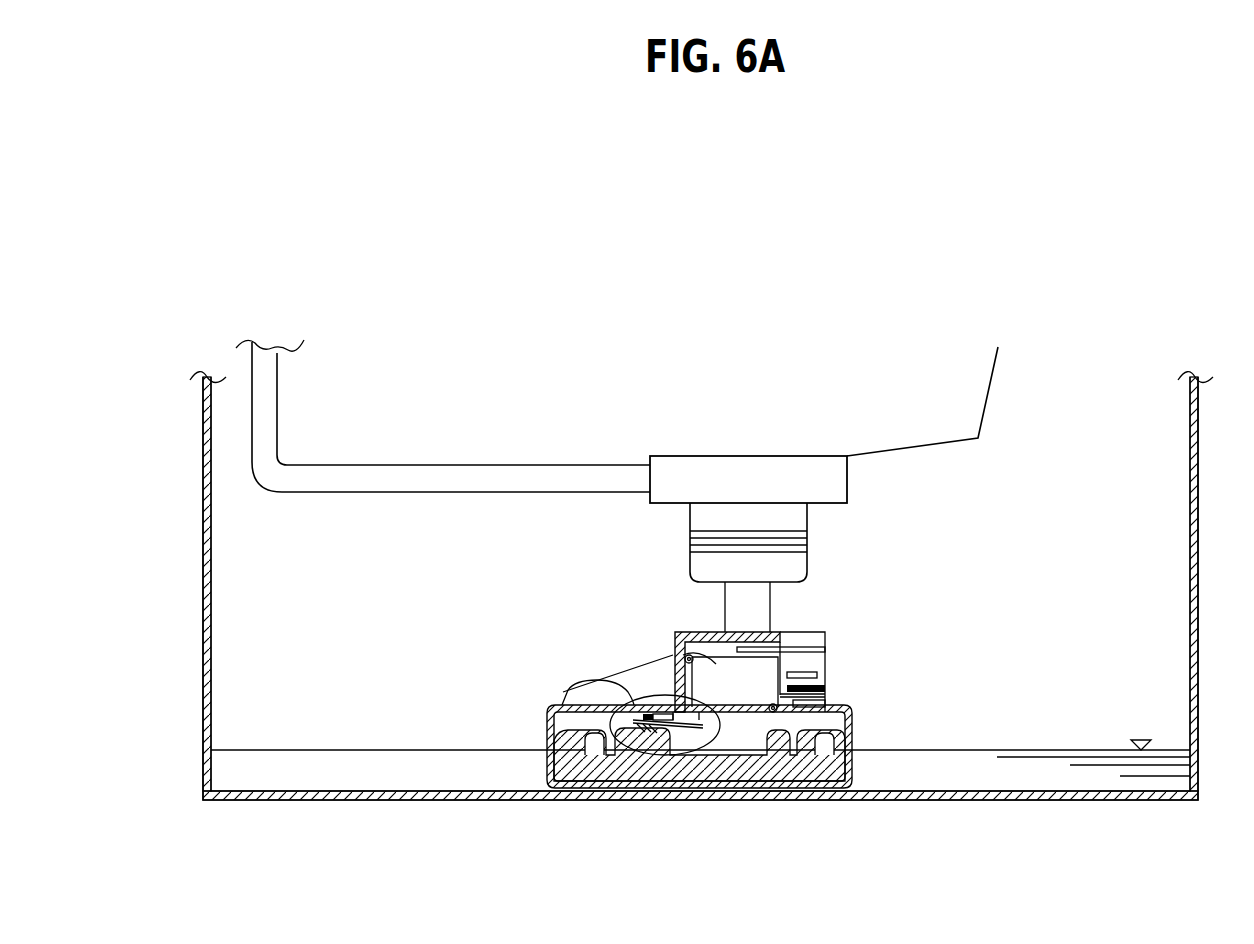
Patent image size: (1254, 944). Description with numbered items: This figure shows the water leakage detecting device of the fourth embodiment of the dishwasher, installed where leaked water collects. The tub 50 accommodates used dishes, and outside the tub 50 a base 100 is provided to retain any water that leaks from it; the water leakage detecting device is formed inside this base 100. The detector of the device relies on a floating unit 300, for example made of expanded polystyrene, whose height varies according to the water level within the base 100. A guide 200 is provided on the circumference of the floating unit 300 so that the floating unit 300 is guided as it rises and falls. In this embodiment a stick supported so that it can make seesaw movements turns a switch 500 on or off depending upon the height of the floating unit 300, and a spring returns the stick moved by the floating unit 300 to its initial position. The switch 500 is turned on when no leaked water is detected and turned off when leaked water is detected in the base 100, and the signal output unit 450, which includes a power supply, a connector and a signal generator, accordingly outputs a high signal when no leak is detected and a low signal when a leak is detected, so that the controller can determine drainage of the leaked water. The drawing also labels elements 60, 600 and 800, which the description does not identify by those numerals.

The tub 50 is at (968, 410).
The pump motor 60 is at (795, 544).
The base 100 is at (470, 795).
The guide 200 is at (850, 706).
The floating unit 300 is at (812, 780).
The signal output unit 450 is at (716, 664).
The switch 500 is at (700, 713).
The water 600 is at (1062, 770).
The sensor 800 is at (597, 680).